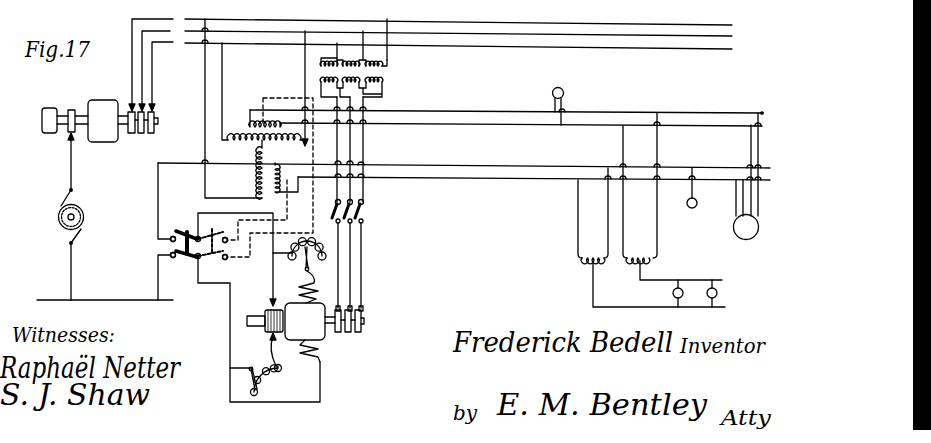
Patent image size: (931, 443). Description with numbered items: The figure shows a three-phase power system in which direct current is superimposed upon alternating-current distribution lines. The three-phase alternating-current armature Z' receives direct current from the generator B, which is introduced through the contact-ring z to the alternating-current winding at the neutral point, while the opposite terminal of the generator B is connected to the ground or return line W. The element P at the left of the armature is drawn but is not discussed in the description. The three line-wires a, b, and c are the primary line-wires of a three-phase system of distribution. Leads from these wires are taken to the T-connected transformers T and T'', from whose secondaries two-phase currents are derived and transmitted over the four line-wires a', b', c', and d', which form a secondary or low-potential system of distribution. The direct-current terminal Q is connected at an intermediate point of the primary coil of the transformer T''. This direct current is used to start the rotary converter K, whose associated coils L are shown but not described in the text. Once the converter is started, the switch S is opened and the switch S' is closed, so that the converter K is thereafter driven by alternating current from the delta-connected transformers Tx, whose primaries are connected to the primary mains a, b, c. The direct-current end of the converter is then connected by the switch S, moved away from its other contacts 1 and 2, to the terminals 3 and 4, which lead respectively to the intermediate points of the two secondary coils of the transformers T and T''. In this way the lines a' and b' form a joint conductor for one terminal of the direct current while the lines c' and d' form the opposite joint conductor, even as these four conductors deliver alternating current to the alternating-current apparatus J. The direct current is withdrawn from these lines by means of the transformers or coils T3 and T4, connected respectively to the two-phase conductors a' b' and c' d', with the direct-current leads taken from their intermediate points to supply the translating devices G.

The line-wire a is at (430, 56).
The line-wire b is at (435, 58).
The line-wire c is at (440, 69).
The pulley P is at (42, 121).
The contact-ring z is at (70, 110).
The three-phase alternating-current armature Z' is at (123, 121).
The generator B is at (59, 216).
The ground or return line W is at (105, 289).
The T-connected transformer T is at (255, 108).
The delta-connected transformers Tx is at (365, 110).
The line-wire a' is at (506, 103).
The line-wire b' is at (521, 131).
The line-wire c' is at (464, 157).
The line-wire d' is at (534, 186).
The direct-current terminal Q is at (252, 169).
The T-connected transformer T'' is at (282, 187).
The switch S is at (239, 282).
The switch contact 1 is at (169, 232).
The switch contact 2 is at (170, 264).
The terminal 3 is at (230, 232).
The terminal 4 is at (230, 252).
The switch S' is at (357, 256).
The rotary converter K is at (305, 334).
The regulating coil L is at (282, 317).
The alternating-current apparatus J is at (656, 162).
The transformer or coil T4 is at (651, 237).
The transformer or coil T3 is at (672, 196).
The translating devices G is at (702, 293).